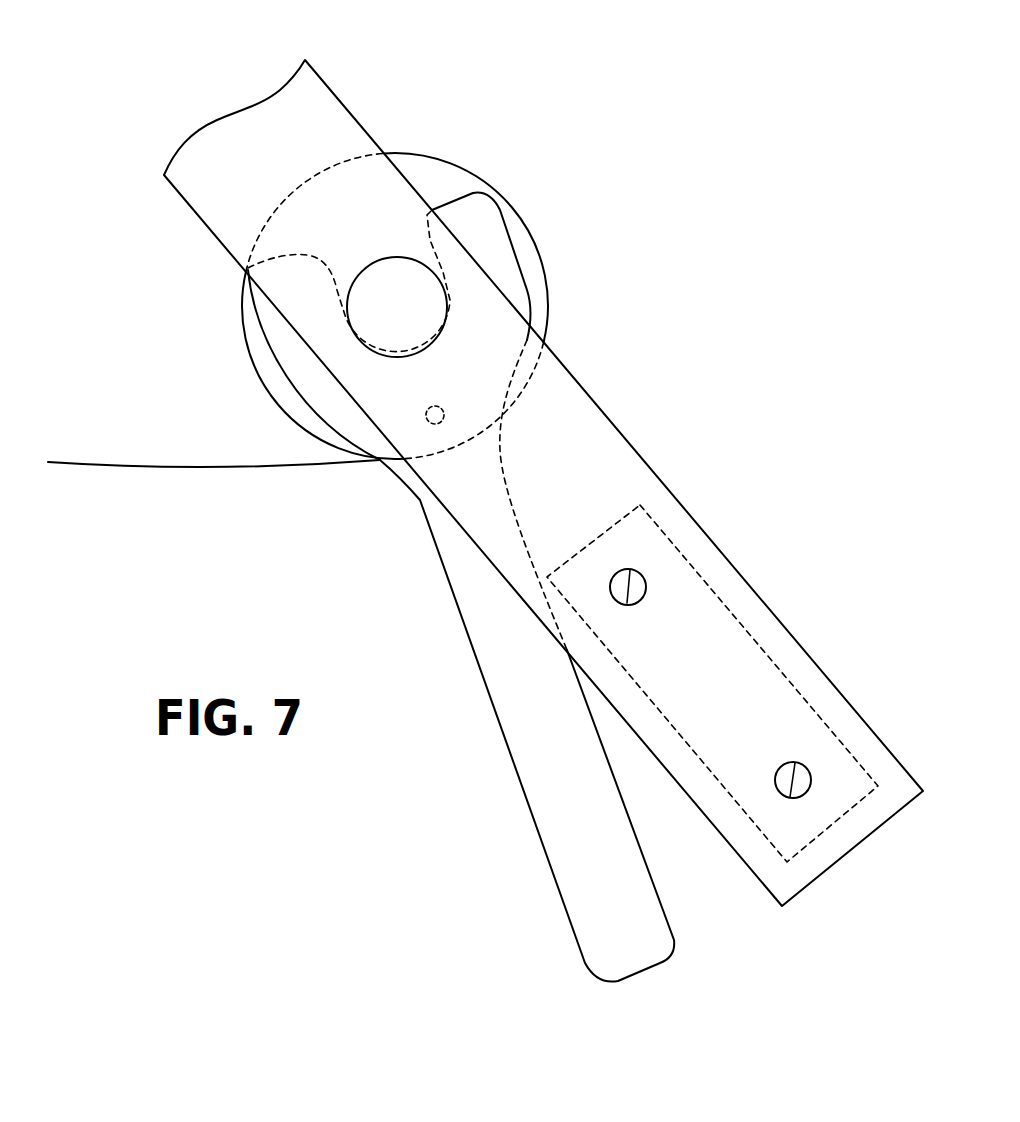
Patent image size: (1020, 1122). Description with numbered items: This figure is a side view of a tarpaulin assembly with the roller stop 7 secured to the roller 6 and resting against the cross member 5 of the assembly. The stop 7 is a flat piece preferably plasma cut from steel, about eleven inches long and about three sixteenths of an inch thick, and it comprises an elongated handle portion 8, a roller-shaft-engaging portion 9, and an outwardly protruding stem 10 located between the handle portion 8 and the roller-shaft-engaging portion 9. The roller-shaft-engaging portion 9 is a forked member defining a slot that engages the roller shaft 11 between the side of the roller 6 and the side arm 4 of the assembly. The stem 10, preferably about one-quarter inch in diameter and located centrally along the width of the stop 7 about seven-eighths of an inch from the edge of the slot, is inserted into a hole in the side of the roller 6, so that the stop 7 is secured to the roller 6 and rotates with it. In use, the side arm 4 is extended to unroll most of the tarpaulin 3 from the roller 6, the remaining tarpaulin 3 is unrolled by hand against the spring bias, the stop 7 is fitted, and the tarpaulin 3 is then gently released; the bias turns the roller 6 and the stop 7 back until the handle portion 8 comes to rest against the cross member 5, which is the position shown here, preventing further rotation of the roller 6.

The tarpaulin 3 is at (155, 465).
The side arm 4 is at (338, 137).
The cross member 5 is at (735, 647).
The roller 6 is at (445, 177).
The roller stop 7 is at (425, 575).
The handle portion 8 is at (553, 843).
The roller-shaft-engaging portion 9 is at (495, 223).
The stem 10 is at (447, 412).
The roller shaft 11 is at (370, 267).